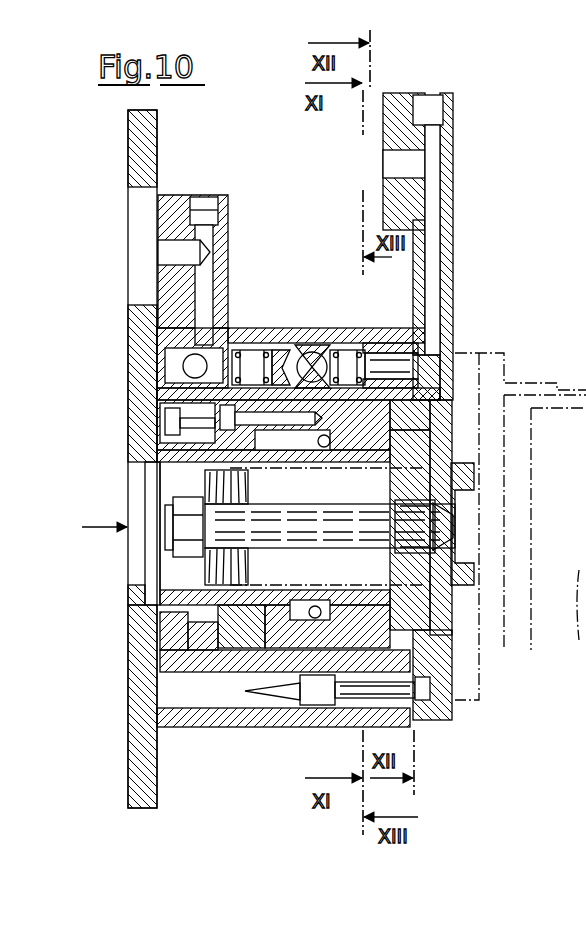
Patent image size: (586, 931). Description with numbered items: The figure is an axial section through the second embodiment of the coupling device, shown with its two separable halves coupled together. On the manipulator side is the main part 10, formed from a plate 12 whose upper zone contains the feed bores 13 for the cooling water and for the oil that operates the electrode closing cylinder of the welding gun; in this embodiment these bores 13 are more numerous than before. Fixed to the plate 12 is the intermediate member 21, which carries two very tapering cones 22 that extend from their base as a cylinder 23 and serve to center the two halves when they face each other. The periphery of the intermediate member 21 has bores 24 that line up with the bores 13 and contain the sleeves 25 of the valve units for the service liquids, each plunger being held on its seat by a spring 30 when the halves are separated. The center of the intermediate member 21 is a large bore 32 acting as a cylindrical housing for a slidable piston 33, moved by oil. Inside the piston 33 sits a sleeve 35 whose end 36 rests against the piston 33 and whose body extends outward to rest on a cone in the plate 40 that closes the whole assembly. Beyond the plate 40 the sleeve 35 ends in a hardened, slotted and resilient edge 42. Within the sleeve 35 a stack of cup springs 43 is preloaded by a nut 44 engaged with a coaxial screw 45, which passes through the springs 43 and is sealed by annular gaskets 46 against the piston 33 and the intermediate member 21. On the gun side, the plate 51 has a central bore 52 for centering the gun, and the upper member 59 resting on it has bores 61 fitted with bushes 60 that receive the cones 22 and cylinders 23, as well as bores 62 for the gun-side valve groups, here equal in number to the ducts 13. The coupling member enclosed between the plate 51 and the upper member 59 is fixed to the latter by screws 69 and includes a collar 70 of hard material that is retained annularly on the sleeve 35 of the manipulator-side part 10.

The main part 10 is at (464, 165).
The plate 12 is at (455, 195).
The bores 13 is at (445, 125).
The intermediate member 21 is at (360, 620).
The tapering cones 22 is at (255, 695).
The cylinder 23 is at (322, 706).
The bores 24 is at (425, 365).
The sleeve 25 is at (378, 345).
The spring 30 is at (405, 440).
The bore 32 is at (398, 445).
The piston 33 is at (318, 440).
The sleeve 35 is at (337, 461).
The end 36 is at (363, 462).
The plate 40 is at (256, 388).
The hardened edge 42 is at (175, 458).
The cup springs 43 is at (215, 568).
The nut 44 is at (185, 518).
The coaxial screw 45 is at (325, 548).
The annular gaskets 46 is at (413, 503).
The plate 51 is at (165, 380).
The bore 52 is at (142, 583).
The upper member 59 is at (225, 272).
The bushes 60 is at (335, 727).
The bores 61 is at (175, 707).
The bores 62 is at (205, 272).
The screws 69 is at (168, 420).
The collar 70 is at (175, 636).